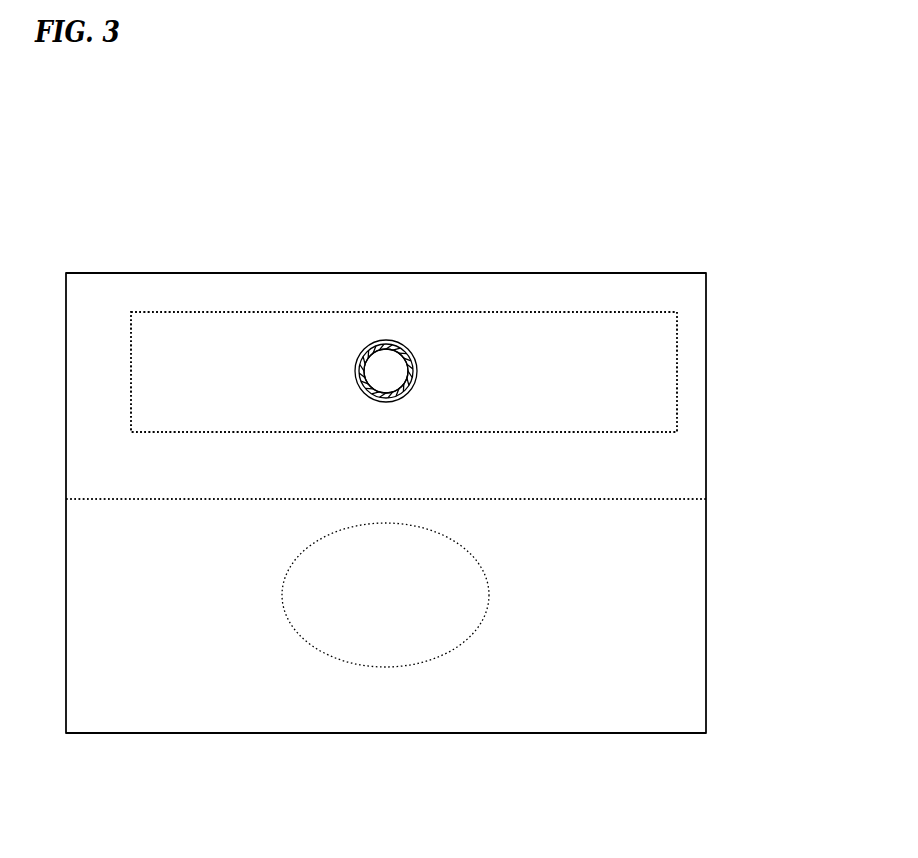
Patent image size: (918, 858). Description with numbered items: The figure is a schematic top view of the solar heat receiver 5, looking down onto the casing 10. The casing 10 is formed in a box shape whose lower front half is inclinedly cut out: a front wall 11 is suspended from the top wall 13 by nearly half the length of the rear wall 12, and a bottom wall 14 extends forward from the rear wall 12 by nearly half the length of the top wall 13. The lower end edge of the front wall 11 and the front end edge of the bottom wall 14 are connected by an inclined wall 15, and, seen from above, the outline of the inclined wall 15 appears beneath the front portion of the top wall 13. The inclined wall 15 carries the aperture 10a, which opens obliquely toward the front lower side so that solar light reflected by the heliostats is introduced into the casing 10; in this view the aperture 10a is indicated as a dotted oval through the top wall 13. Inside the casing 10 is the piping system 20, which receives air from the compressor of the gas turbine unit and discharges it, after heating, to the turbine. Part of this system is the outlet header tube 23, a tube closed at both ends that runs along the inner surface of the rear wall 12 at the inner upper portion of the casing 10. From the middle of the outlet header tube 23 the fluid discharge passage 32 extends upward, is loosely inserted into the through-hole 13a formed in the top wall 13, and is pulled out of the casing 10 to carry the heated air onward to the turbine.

The solar heat receiver 5 is at (179, 170).
The casing 10 is at (712, 303).
The aperture 10a is at (278, 607).
The front wall 11 is at (545, 734).
The rear wall 12 is at (393, 273).
The top wall 13 is at (595, 292).
The through-hole 13a is at (397, 378).
The bottom wall 14 is at (692, 410).
The inclined wall 15 is at (645, 703).
The piping system 20 is at (636, 441).
The outlet header tube 23 is at (662, 358).
The fluid discharge passage 32 is at (358, 360).